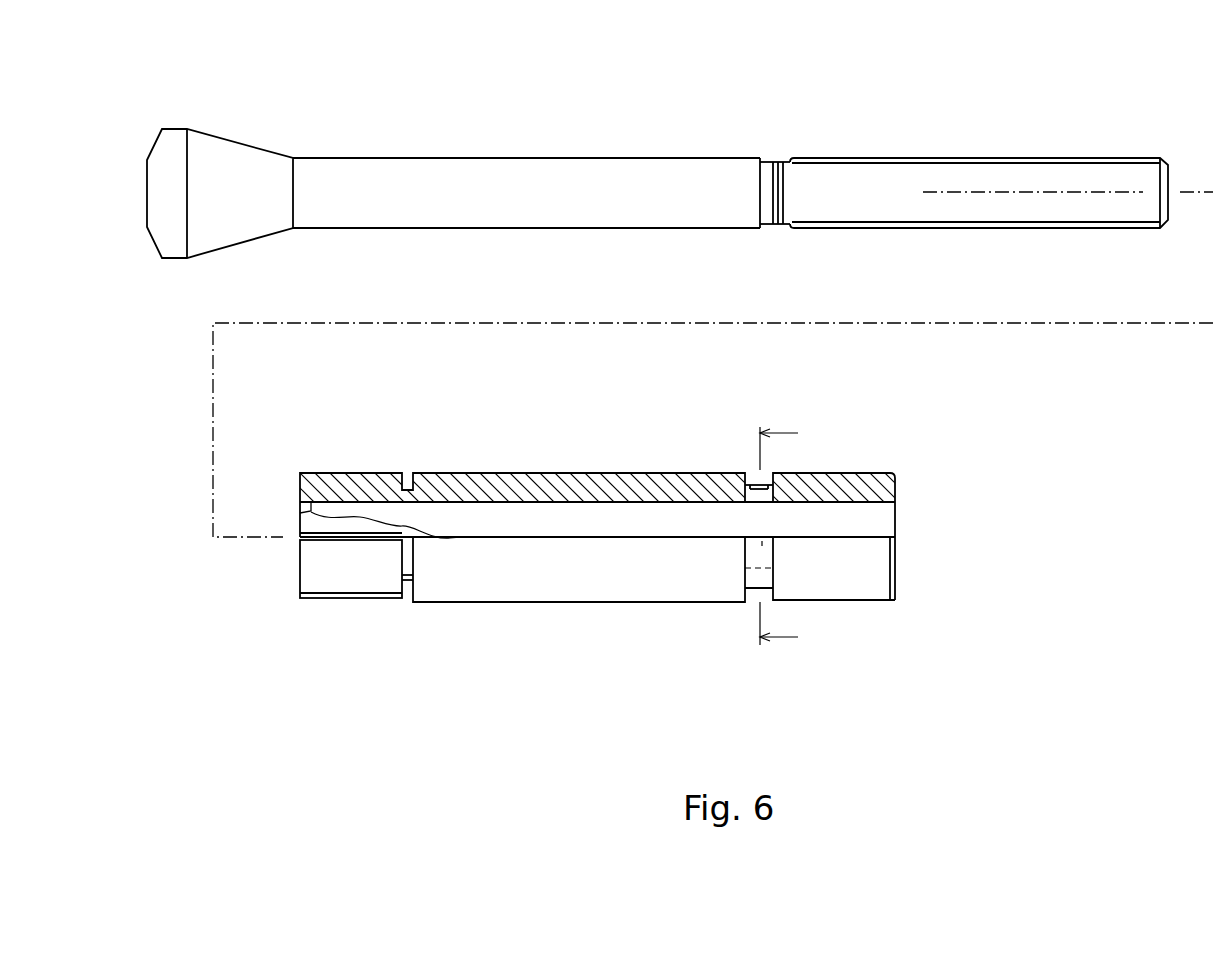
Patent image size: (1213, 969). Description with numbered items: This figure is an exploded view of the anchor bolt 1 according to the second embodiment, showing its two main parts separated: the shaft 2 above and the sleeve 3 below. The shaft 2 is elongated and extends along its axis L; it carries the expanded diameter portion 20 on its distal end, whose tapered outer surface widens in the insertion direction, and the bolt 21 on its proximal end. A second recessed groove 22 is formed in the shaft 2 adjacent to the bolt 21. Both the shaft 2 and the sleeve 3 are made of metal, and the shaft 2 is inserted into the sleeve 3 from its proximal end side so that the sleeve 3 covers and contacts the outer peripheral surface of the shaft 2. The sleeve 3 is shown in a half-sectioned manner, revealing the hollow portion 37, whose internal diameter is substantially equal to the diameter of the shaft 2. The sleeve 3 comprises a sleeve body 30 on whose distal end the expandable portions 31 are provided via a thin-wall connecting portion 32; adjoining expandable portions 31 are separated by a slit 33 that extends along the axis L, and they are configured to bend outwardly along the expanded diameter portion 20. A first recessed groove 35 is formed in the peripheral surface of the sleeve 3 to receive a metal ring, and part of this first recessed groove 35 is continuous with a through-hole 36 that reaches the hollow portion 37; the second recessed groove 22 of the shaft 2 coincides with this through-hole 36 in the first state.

The anchor bolt 1 is at (680, 371).
The shaft 2 is at (680, 140).
The expanded diameter portion 20 is at (248, 163).
The bolt 21 is at (865, 175).
The second recessed groove 22 is at (776, 163).
The axis L is at (1005, 192).
The sleeve 3 is at (629, 548).
The sleeve body 30 is at (455, 597).
The expandable portions 31 is at (344, 586).
The thin-wall connecting portion 32 is at (405, 573).
The slit 33 is at (347, 533).
The first recessed groove 35 is at (765, 488).
The through-hole 36 is at (773, 546).
The hollow portion 37 is at (875, 503).